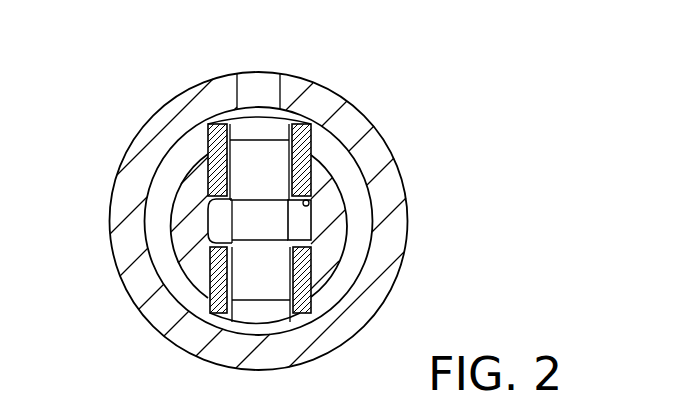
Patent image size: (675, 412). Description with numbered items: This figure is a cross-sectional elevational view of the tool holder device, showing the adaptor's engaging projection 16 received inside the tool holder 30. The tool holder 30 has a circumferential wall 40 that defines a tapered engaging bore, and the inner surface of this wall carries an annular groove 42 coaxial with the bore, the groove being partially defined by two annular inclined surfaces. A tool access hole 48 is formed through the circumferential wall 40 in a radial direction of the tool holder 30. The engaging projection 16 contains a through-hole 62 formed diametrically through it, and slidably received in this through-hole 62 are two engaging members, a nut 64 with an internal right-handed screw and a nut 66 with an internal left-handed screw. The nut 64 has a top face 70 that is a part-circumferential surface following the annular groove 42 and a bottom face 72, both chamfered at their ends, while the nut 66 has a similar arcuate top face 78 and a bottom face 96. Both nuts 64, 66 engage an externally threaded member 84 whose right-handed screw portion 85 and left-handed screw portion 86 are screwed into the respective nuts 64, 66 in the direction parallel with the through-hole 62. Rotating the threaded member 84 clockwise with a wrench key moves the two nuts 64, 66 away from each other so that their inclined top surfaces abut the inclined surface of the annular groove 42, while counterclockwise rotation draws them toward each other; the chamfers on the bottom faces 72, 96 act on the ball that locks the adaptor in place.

The tool holder 30 is at (403, 78).
The circumferential wall 40 is at (360, 126).
The annular groove 42 is at (284, 268).
The tool access hole 48 is at (283, 73).
The engaging projection 16 is at (278, 224).
The right-handed screw portion 85 is at (285, 157).
The nut 64 is at (306, 160).
The externally threaded member 84 is at (312, 238).
The left-handed screw portion 86 is at (313, 281).
The bottom face 72 is at (209, 205).
The bottom face 96 is at (209, 235).
The through-hole 62 is at (309, 203).
The top face 70 is at (222, 105).
The nut 66 is at (352, 312).
The arcuate top face 78 is at (305, 358).